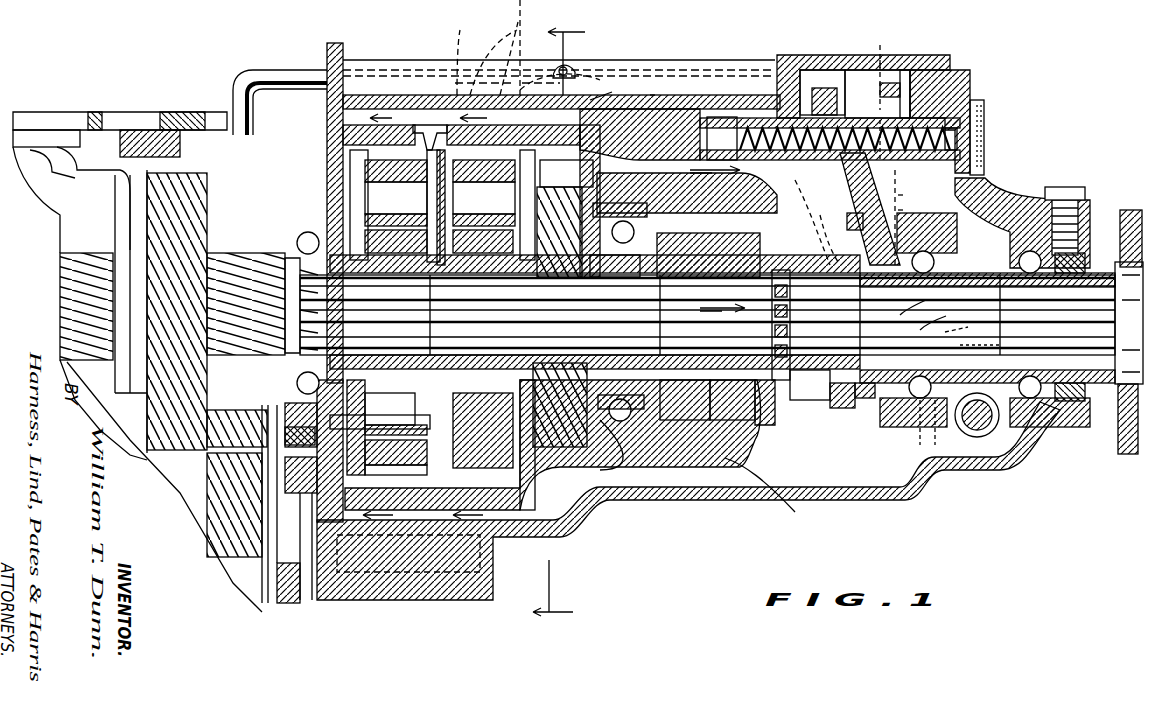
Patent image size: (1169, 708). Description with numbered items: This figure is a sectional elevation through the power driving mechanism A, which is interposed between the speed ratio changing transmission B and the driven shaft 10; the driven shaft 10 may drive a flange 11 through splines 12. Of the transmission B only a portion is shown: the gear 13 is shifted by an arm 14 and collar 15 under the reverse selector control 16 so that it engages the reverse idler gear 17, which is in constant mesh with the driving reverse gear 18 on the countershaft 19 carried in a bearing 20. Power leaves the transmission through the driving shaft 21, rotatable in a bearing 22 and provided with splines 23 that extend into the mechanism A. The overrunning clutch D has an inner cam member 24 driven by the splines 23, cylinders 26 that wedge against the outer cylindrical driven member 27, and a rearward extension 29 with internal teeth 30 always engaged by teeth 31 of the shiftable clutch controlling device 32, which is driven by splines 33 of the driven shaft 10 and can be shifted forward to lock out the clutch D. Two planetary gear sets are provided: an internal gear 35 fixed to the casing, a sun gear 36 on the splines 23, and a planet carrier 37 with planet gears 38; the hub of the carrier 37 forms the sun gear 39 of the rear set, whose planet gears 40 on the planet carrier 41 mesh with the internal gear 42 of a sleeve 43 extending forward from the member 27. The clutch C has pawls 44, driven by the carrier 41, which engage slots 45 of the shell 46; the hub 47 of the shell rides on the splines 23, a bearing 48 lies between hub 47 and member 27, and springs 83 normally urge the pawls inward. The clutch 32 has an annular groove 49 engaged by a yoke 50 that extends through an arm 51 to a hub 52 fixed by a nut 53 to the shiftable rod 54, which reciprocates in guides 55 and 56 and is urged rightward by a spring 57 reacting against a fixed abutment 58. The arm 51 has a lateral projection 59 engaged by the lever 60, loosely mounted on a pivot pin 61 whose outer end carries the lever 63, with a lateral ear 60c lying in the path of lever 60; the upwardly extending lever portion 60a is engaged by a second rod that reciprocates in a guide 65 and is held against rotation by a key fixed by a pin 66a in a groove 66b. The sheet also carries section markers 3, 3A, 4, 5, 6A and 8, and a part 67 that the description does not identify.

The driving mechanism A is at (419, 49).
The speed ratio changing transmission B is at (118, 106).
The clutch C is at (612, 492).
The overrunning clutch D is at (760, 496).
The section line 3 is at (896, 252).
The shifter fork part 3A is at (815, 218).
The section line 4 is at (723, 242).
The section line 5 is at (545, 324).
The housing cover block 6A is at (806, 68).
The oil passage 8 is at (438, 319).
The driven shaft 10 is at (955, 290).
The flange 11 is at (1125, 210).
The splines 12 is at (1115, 410).
The gear 13 is at (205, 190).
The arm 14 is at (100, 185).
The collar 15 is at (113, 240).
The reverse selector control 16 is at (44, 113).
The reverse idler gear 17 is at (255, 410).
The driving reverse gear 18 is at (228, 560).
The transmission countershaft 19 is at (182, 512).
The bearing 20 is at (262, 600).
The driving shaft 21 is at (282, 275).
The bearing 22 is at (325, 182).
The splines 23 is at (282, 330).
The inner cam member 24 is at (770, 415).
The cylinders 26 is at (706, 450).
The outer cylindrical driven member 27 is at (733, 460).
The rearward extension 29 is at (830, 405).
The internal teeth 30 is at (837, 407).
The teeth 31 is at (848, 400).
The shiftable clutch controlling device 32 is at (812, 332).
The splines 33 is at (945, 317).
The internal gear 35 is at (395, 470).
The sun gear 36 is at (396, 233).
The planet carrier 37 is at (357, 427).
The planet gears 38 is at (396, 187).
The sun gear 39 is at (484, 233).
The planet gears 40 is at (494, 205).
The planet carrier 41 is at (520, 285).
The internal gear 42 is at (520, 480).
The sleeve 43 is at (612, 91).
The pawls 44 is at (560, 450).
The slots 45 is at (663, 91).
The shell 46 is at (687, 218).
The hub 47 is at (618, 240).
The bearing 48 is at (640, 450).
The annular groove 49 is at (925, 300).
The yoke 50 is at (927, 233).
The arm 51 is at (870, 209).
The hub 52 is at (893, 85).
The nut 53 is at (832, 110).
The shiftable rod 54 is at (935, 110).
The guide 55 is at (758, 117).
The guide 56 is at (962, 115).
The spring 57 is at (986, 130).
The fixed abutment 58 is at (986, 155).
The lateral projection 59 is at (823, 230).
The lever 60 is at (911, 193).
The lever portion 60a is at (878, 141).
The lateral ear 60c is at (916, 208).
The pivot pin 61 is at (815, 182).
The lever 63 is at (972, 331).
The guide 65 is at (498, 40).
The pin 66a is at (578, 66).
The groove 66b is at (514, 47).
The oil pipe 67 is at (238, 102).
The springs 83 is at (565, 218).